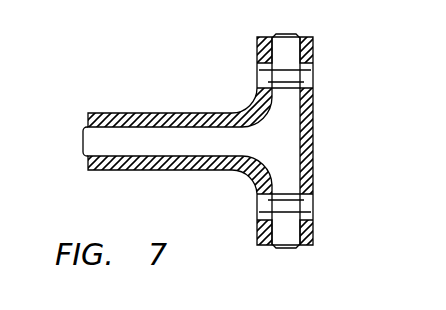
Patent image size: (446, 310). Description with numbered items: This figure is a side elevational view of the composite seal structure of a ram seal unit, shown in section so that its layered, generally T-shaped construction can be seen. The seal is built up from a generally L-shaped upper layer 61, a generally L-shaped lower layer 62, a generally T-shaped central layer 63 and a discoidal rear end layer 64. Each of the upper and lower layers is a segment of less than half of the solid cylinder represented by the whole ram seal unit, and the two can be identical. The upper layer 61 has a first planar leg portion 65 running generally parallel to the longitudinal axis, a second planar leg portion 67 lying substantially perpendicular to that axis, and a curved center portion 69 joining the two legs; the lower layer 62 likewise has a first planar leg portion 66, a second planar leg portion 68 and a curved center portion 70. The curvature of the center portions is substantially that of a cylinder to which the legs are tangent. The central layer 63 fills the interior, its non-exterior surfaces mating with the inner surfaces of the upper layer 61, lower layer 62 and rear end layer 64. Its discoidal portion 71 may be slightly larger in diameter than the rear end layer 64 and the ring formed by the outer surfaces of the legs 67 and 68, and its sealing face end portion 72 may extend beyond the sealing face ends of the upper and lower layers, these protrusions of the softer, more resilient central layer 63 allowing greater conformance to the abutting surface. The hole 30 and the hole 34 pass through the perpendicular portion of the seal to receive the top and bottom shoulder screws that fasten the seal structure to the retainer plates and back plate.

The hole 30 is at (313, 72).
The hole 34 is at (312, 245).
The upper layer 61 is at (177, 95).
The lower layer 62 is at (178, 190).
The central layer 63 is at (284, 153).
The rear end layer 64 is at (289, 163).
The first planar leg portion 65 is at (113, 113).
The first planar leg portion 66 is at (113, 170).
The second planar leg portion 67 is at (257, 55).
The second planar leg portion 68 is at (257, 234).
The curved center portion 69 is at (250, 111).
The curved center portion 70 is at (248, 175).
The discoidal portion 71 is at (288, 249).
The sealing face end portion 72 is at (83, 140).